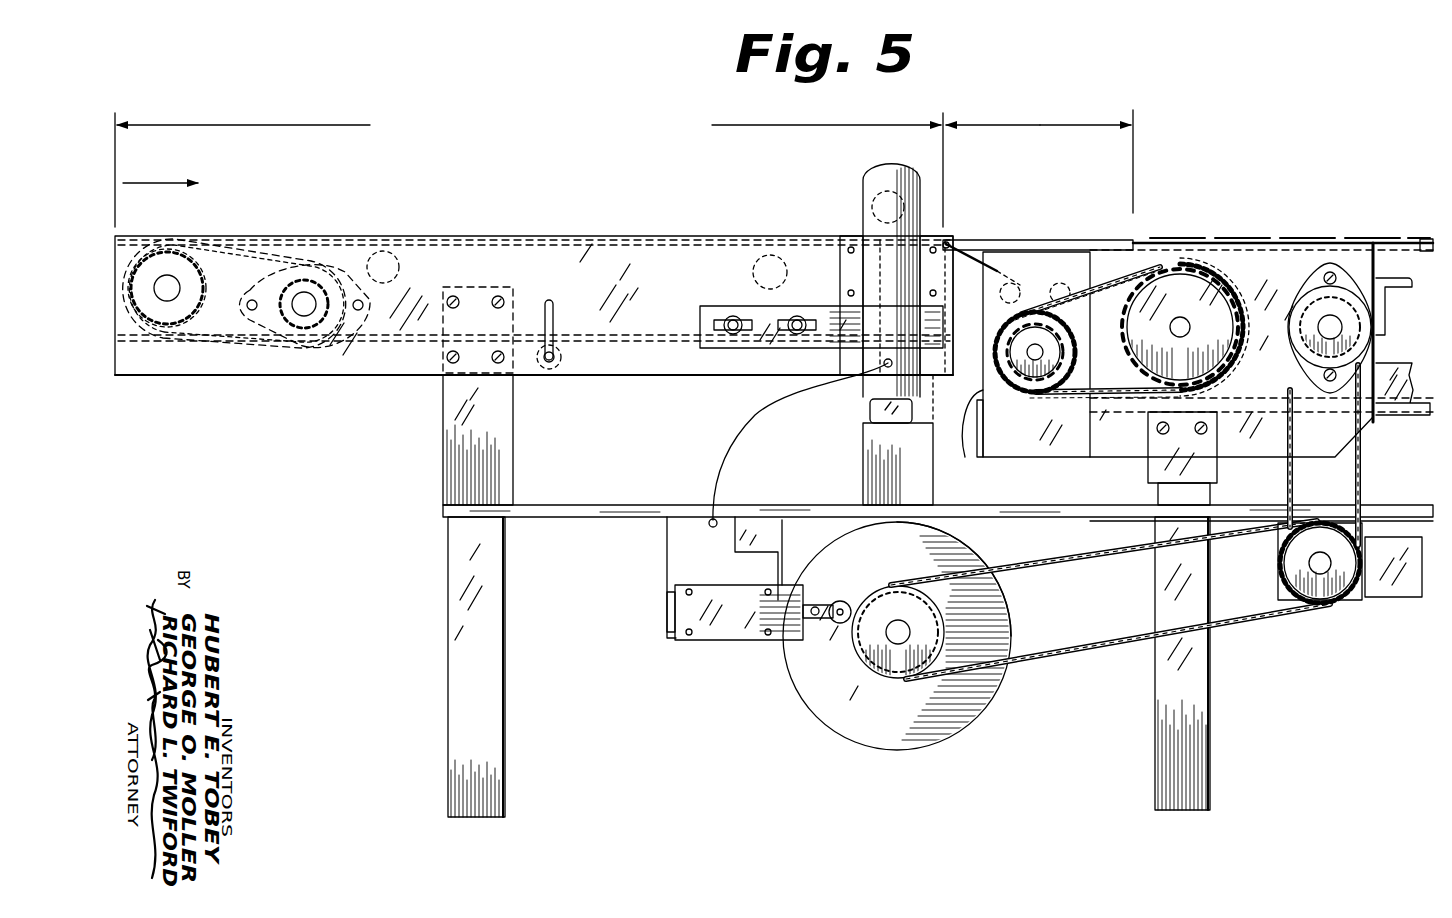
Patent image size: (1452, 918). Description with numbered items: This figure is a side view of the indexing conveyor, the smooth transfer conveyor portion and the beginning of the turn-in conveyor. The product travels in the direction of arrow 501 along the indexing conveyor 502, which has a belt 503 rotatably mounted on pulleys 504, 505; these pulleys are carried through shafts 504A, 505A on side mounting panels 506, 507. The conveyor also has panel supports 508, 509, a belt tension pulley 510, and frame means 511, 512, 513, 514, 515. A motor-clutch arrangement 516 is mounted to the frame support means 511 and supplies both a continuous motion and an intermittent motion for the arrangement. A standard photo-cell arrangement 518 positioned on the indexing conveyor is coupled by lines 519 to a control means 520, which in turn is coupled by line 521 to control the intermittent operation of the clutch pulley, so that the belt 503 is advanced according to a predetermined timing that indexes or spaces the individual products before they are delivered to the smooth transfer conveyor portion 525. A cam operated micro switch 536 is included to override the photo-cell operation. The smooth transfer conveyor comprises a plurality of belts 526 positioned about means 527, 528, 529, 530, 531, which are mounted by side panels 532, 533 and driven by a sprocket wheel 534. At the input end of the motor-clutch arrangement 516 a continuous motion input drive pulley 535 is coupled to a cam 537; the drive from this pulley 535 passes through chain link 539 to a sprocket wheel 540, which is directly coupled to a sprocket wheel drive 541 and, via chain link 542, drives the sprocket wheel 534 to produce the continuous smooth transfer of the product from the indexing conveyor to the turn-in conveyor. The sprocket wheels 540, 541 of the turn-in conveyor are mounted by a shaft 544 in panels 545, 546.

The arrow 501 is at (150, 183).
The indexing conveyor 502 is at (529, 170).
The belt 503 is at (345, 237).
The pulley 504 is at (170, 255).
The shaft 504A is at (167, 300).
The pulley 505 is at (871, 305).
The shaft 505A is at (821, 314).
The side mounting panel 506 is at (296, 376).
The side mounting panel 507 is at (406, 376).
The panel support 508 is at (400, 267).
The panel support 509 is at (752, 270).
The belt tension pulley 510 is at (556, 368).
The frame means 511 is at (574, 512).
The frame means 512 is at (505, 447).
The frame means 513 is at (863, 441).
The frame means 514 is at (506, 690).
The frame means 515 is at (1200, 727).
The motor-clutch arrangement 516 is at (816, 696).
The photo-cell arrangement 518 is at (863, 215).
The lines 519 is at (738, 431).
The control means 520 is at (665, 560).
The line 521 is at (776, 577).
The smooth transfer conveyor portion 525 is at (1039, 125).
The belts 526 is at (975, 252).
The belt positioning means 527 is at (1020, 276).
The belt positioning means 528 is at (1058, 284).
The belt positioning means 529 is at (1105, 240).
The belt positioning means 530 is at (958, 242).
The belt positioning means 531 is at (1027, 398).
The side panel 532 is at (1030, 450).
The side panel 533 is at (968, 458).
The sprocket wheel 534 is at (1058, 378).
The continuous motion input drive pulley 535 is at (1004, 610).
The cam operated micro switch 536 is at (718, 642).
The cam 537 is at (898, 680).
The chain link 539 is at (1095, 652).
The sprocket wheel 540 is at (1343, 605).
The sprocket wheel drive 541 is at (1302, 368).
The chain link 542 is at (1105, 398).
The shaft 544 is at (1180, 327).
The panel 545 is at (1253, 460).
The panel 546 is at (1318, 462).